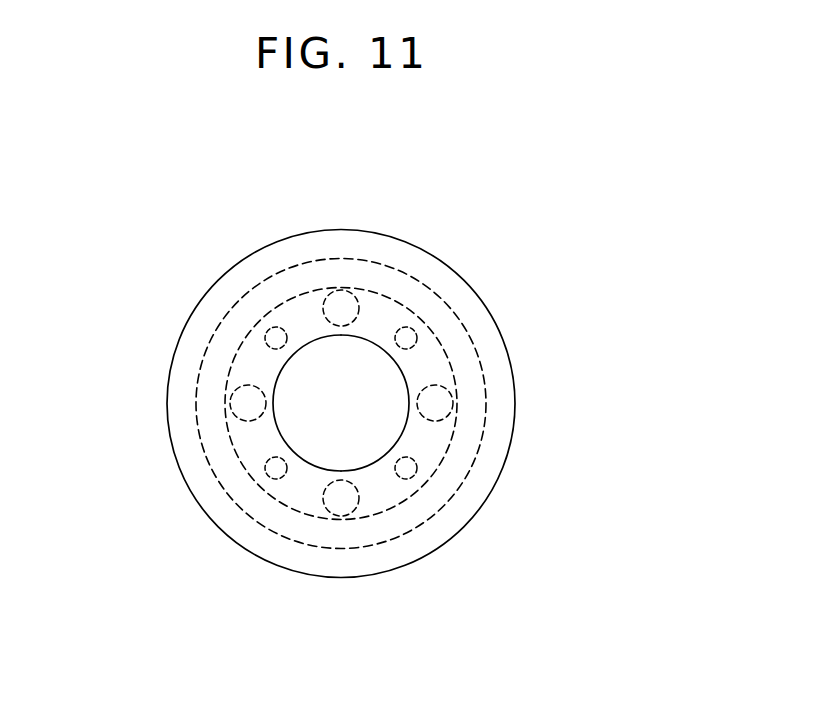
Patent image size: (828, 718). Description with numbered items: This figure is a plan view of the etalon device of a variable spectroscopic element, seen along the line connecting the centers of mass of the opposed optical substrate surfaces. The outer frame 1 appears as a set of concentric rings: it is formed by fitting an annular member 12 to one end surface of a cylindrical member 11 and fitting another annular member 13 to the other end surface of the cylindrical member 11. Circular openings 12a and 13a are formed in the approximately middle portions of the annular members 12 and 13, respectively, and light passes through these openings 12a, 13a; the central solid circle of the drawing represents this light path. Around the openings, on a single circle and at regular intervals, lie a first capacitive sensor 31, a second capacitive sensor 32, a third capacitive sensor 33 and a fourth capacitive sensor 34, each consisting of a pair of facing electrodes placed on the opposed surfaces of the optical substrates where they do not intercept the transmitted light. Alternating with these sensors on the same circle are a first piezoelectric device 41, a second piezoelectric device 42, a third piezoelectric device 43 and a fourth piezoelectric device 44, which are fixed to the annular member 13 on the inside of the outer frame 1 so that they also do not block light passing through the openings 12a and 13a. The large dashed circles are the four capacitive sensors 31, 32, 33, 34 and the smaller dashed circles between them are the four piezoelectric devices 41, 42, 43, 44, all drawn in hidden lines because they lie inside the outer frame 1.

The outer frame 1 is at (93, 445).
The cylindrical member 11 is at (200, 482).
The annular member 12 is at (245, 479).
The annular member 13 is at (237, 502).
The circular opening 12a is at (290, 358).
The circular opening 13a is at (403, 430).
The first capacitive sensor 31 is at (232, 420).
The second capacitive sensor 32 is at (330, 302).
The third capacitive sensor 33 is at (445, 396).
The fourth capacitive sensor 34 is at (355, 505).
The first piezoelectric device 41 is at (265, 342).
The second piezoelectric device 42 is at (406, 330).
The third piezoelectric device 43 is at (418, 463).
The fourth piezoelectric device 44 is at (280, 480).